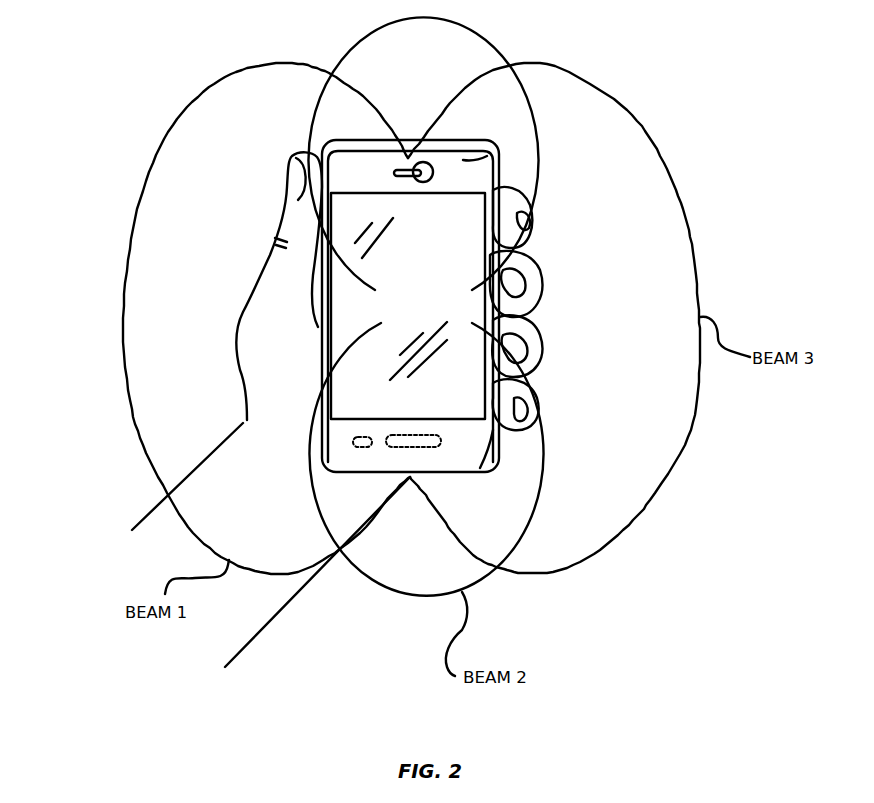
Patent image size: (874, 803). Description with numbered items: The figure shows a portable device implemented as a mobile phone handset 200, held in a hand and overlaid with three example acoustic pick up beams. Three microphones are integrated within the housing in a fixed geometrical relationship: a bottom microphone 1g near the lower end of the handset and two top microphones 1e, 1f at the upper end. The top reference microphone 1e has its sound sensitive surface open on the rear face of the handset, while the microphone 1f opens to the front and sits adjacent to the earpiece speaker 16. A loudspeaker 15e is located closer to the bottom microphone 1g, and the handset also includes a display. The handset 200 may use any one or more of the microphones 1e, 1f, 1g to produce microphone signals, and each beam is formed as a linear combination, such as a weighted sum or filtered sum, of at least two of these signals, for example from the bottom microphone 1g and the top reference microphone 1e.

The mobile phone handset 200 is at (353, 133).
The earpiece speaker 16 is at (397, 174).
The top reference microphone 1e is at (491, 168).
The top microphone 1f is at (428, 182).
The bottom microphone 1g is at (355, 443).
The loudspeaker 15e is at (435, 448).